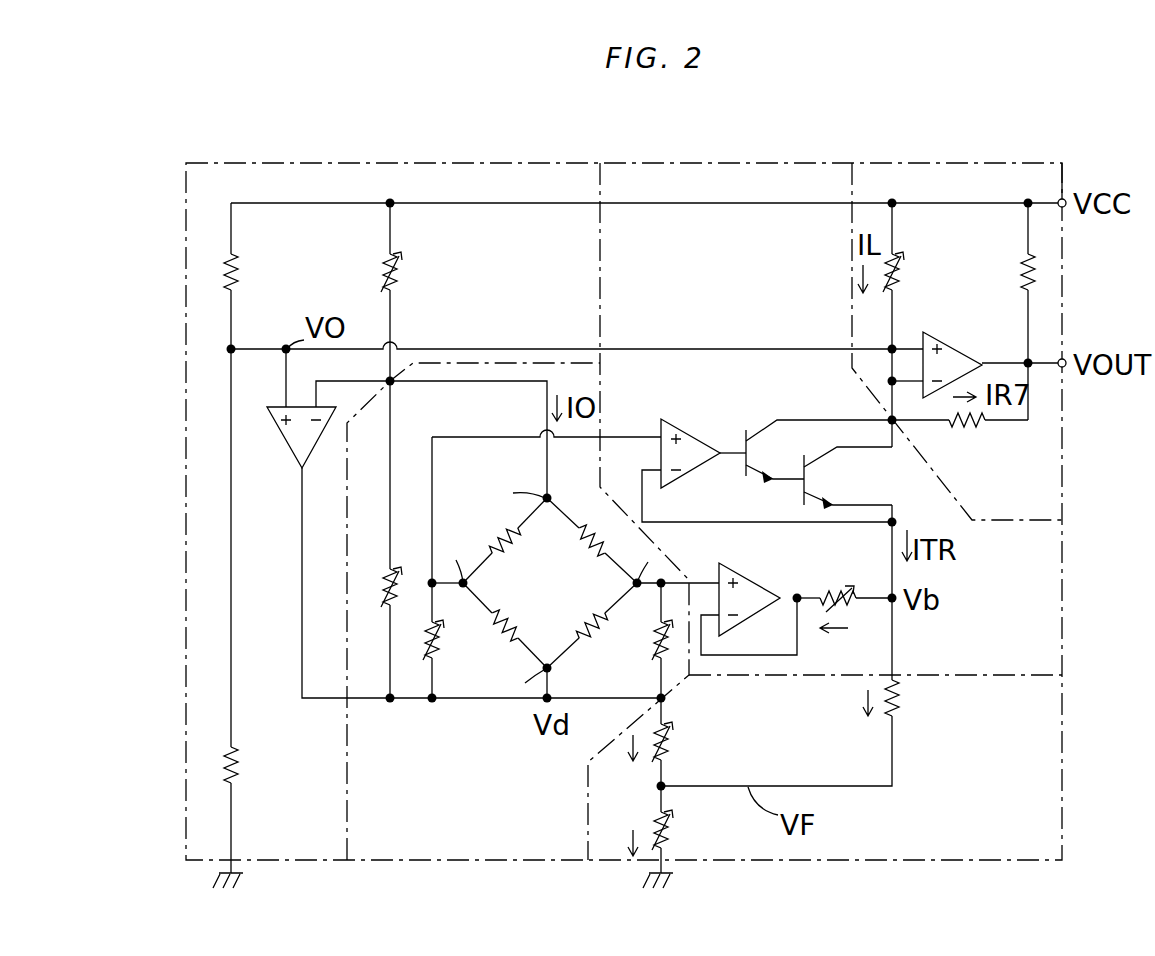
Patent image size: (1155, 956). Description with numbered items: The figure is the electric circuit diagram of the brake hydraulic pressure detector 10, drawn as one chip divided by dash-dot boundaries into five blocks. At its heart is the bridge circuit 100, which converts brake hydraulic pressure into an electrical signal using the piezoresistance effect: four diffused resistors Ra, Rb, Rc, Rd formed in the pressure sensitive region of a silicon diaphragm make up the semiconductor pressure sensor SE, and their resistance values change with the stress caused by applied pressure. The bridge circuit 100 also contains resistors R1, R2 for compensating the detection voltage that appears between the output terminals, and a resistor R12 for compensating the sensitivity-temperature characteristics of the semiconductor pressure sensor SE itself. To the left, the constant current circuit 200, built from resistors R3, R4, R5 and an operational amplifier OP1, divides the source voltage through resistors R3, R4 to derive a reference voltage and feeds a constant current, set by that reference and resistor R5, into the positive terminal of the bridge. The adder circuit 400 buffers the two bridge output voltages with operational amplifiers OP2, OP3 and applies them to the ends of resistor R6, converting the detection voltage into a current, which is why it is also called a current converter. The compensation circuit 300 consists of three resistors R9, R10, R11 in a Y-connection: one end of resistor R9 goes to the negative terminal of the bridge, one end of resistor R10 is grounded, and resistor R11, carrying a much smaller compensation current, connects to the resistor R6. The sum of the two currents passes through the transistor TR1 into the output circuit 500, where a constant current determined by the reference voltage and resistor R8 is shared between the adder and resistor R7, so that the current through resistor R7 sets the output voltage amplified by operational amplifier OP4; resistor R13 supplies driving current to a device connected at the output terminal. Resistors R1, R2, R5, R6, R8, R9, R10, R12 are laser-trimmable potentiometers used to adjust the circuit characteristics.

The brake hydraulic pressure detector 10 is at (184, 478).
The bridge circuit 100 is at (465, 850).
The constant current circuit 200 is at (283, 170).
The compensation circuit 300 is at (835, 855).
The adder circuit 400 is at (688, 176).
The output circuit 500 is at (905, 176).
The semiconductor pressure sensor SE is at (547, 577).
The resistor R1 is at (452, 656).
The resistor R2 is at (644, 656).
The resistor R3 is at (253, 272).
The resistor R4 is at (255, 768).
The resistor R5 is at (371, 272).
The resistor R6 is at (844, 614).
The resistor R7 is at (965, 440).
The resistor R8 is at (914, 272).
The resistor R9 is at (658, 759).
The resistor R10 is at (668, 827).
The resistor R11 is at (900, 718).
The resistor R12 is at (377, 573).
The resistor R13 is at (1006, 263).
The diffused resistor Ra is at (505, 545).
The diffused resistor Rb is at (505, 625).
The diffused resistor Rc is at (592, 545).
The diffused resistor Rd is at (592, 625).
The operational amplifier OP1 is at (290, 460).
The operational amplifier OP2 is at (690, 440).
The operational amplifier OP3 is at (747, 585).
The operational amplifier OP4 is at (938, 356).
The transistor TR1 is at (784, 416).